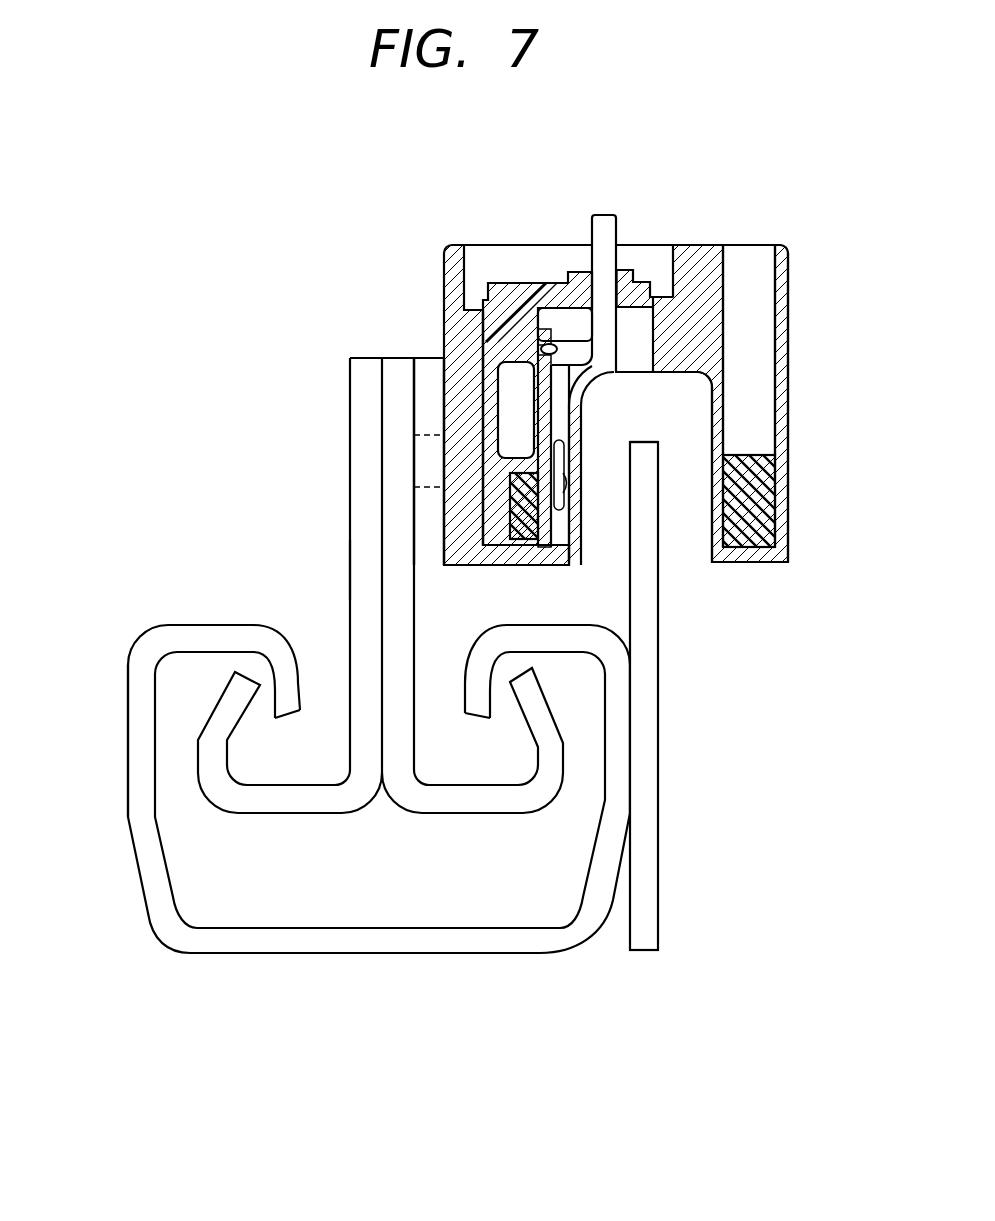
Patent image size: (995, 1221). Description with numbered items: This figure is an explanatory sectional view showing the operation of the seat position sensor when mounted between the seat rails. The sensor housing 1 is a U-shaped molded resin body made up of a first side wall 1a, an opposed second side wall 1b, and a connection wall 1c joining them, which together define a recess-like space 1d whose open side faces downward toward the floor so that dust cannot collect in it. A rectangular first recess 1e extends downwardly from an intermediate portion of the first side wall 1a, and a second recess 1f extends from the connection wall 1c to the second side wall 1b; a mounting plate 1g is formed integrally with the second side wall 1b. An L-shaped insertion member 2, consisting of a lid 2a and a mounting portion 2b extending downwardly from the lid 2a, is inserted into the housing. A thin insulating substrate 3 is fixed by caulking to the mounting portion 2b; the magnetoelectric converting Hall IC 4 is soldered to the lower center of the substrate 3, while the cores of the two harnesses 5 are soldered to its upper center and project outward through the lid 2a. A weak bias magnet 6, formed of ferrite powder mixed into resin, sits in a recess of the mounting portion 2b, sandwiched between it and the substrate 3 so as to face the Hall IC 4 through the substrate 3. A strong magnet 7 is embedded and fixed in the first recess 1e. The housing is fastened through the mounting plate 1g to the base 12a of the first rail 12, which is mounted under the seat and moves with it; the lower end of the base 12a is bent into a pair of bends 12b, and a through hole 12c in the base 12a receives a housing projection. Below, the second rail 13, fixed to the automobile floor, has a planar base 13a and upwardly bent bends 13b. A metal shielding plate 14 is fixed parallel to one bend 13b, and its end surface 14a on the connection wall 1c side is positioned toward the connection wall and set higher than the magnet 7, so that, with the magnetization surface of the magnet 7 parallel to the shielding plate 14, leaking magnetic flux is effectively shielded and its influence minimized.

The housing 1 is at (440, 245).
The first side wall 1a is at (790, 337).
The second side wall 1b is at (440, 508).
The connection wall 1c is at (694, 245).
The space 1d is at (680, 533).
The first recess 1e is at (748, 275).
The second recess 1f is at (636, 298).
The mounting plate 1g is at (405, 405).
The insertion member 2 is at (517, 282).
The lid 2a is at (543, 282).
The mounting portion 2b is at (478, 357).
The substrate 3 is at (557, 404).
The Hall IC 4 is at (568, 488).
The harnesses 5 is at (598, 216).
The bias magnet 6 is at (515, 530).
The magnet 7 is at (748, 457).
The first rail 12 is at (345, 462).
The base 12a is at (350, 573).
The bends 12b is at (413, 813).
The through hole 12c is at (425, 437).
The second rail 13 is at (124, 665).
The base 13a is at (364, 955).
The bends 13b is at (126, 818).
The shielding plate 14 is at (667, 617).
The end surface 14a is at (643, 440).